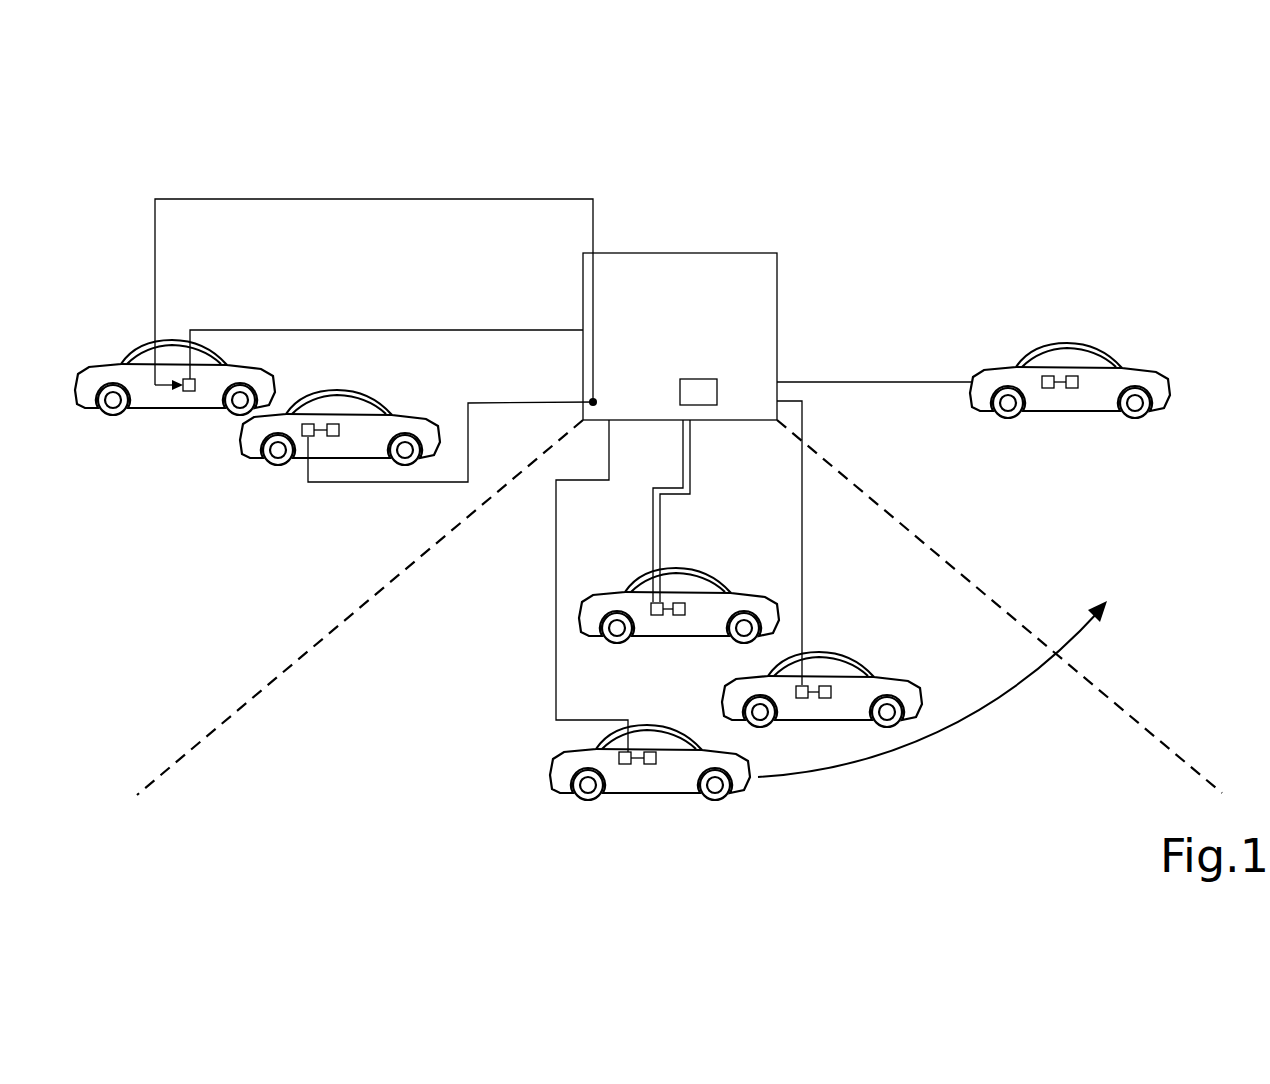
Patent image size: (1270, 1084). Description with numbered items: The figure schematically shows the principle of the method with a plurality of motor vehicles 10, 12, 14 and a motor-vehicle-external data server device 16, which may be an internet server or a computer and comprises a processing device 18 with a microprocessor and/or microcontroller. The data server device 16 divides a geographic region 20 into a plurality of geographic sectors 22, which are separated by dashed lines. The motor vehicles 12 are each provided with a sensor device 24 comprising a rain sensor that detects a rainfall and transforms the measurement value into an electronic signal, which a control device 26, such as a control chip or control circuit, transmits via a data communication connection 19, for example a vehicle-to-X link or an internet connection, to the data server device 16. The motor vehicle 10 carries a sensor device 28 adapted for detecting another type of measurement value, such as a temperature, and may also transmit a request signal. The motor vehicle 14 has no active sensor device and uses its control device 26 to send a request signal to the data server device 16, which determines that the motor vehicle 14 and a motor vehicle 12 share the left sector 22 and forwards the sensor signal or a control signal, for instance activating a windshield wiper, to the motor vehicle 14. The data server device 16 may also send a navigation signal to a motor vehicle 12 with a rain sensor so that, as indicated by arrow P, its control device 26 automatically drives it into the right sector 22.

The motor vehicle 10 is at (1148, 368).
The motor vehicle 12 is at (400, 418).
The motor vehicle 14 is at (87, 410).
The data server device 16 is at (583, 302).
The processing device 18 is at (697, 379).
The data communication connection 19 is at (528, 199).
The geographic region 20 is at (379, 170).
The geographic sector 22 is at (556, 375).
The sensor device 24 is at (333, 424).
The control device 26 is at (193, 392).
The sensor device 28 is at (1072, 376).
The arrow P is at (943, 743).